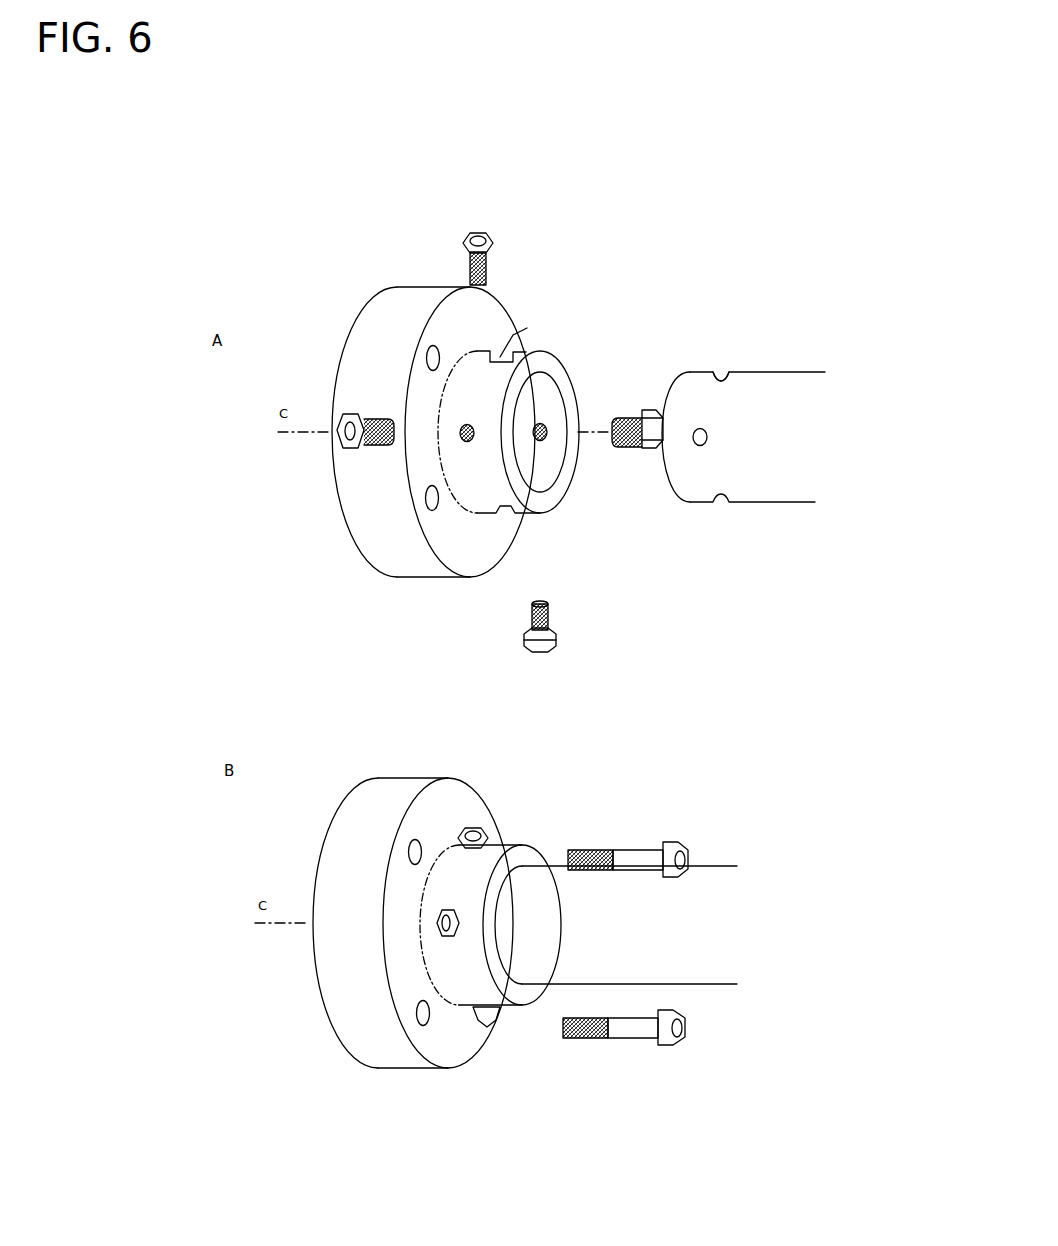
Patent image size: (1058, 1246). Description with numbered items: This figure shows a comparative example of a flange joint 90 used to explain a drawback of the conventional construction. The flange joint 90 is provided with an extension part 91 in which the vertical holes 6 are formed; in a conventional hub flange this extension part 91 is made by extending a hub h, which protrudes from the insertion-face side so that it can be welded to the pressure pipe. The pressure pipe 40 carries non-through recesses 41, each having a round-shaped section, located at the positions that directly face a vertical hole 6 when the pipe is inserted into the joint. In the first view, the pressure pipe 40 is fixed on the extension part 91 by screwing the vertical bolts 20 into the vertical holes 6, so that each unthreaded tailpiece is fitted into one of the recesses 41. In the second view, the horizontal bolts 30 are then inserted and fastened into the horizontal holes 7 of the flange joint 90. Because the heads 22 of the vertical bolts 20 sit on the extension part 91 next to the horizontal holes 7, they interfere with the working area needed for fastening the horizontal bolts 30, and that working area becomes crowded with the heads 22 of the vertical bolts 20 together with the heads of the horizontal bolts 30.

The flange joint 90 is at (360, 340).
The horizontal holes 7 is at (436, 345).
The hub h is at (440, 412).
The vertical holes 6 is at (500, 357).
The extension part 91 is at (533, 352).
The vertical bolts 20 is at (490, 262).
The heads of the vertical bolts 22 is at (493, 243).
The pressure pipe 40 is at (773, 383).
The recesses 41 is at (723, 380).
The horizontal bolts 30 is at (608, 850).